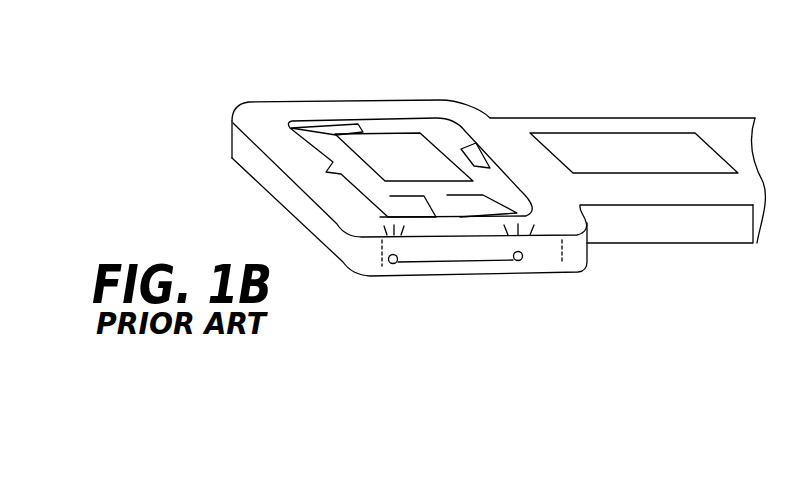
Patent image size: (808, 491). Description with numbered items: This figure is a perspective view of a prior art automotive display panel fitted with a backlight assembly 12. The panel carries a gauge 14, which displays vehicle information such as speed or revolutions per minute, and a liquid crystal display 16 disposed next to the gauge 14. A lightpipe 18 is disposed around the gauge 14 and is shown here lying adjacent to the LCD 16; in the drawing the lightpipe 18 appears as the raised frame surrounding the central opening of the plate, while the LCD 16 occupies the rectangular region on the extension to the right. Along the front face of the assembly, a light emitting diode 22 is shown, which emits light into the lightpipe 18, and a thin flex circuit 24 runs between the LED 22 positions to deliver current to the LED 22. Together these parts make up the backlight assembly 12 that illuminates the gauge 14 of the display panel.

The backlight assembly 12 is at (342, 66).
The gauge 14 is at (229, 72).
The liquid crystal display (LCD) 16 is at (580, 145).
The lightpipe 18 is at (307, 145).
The light emitting diode (LED) 22 is at (393, 264).
The thin flex circuit 24 is at (472, 269).